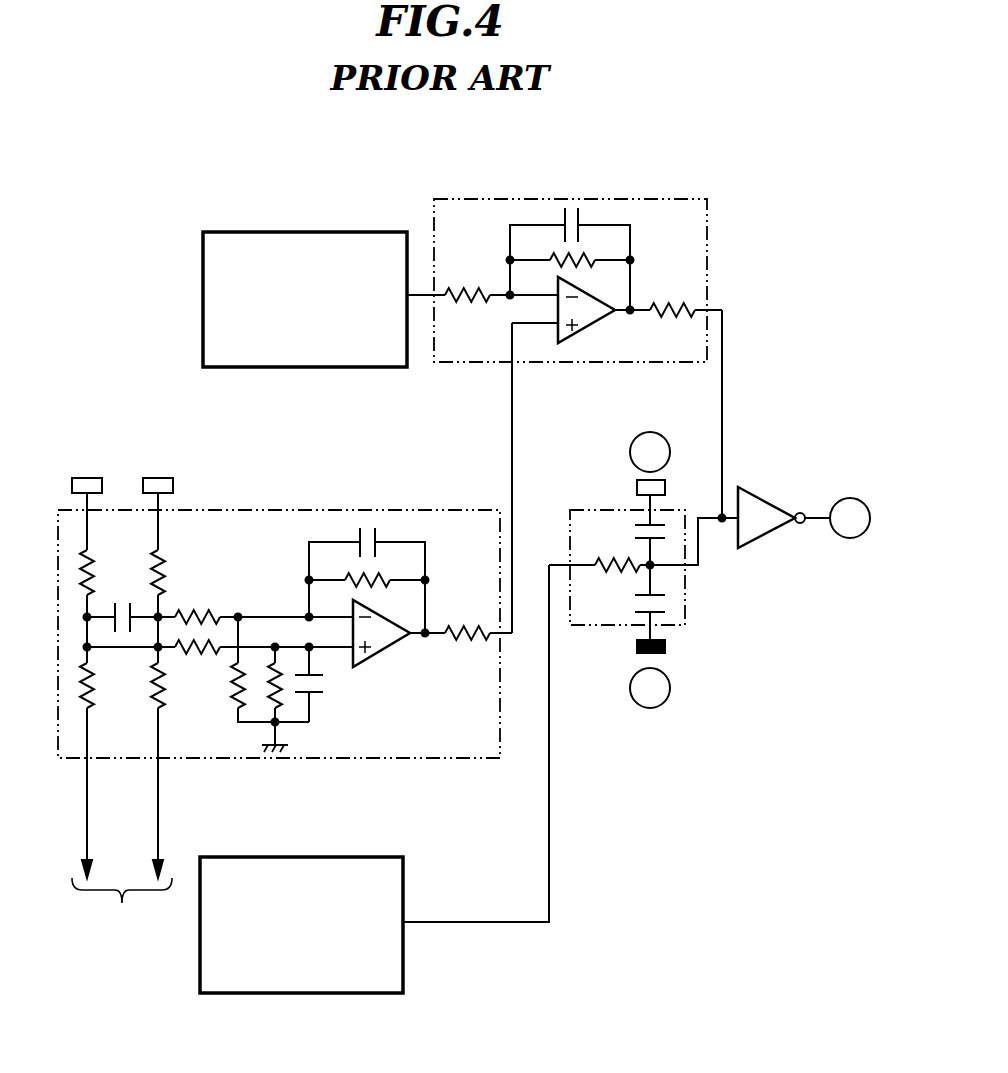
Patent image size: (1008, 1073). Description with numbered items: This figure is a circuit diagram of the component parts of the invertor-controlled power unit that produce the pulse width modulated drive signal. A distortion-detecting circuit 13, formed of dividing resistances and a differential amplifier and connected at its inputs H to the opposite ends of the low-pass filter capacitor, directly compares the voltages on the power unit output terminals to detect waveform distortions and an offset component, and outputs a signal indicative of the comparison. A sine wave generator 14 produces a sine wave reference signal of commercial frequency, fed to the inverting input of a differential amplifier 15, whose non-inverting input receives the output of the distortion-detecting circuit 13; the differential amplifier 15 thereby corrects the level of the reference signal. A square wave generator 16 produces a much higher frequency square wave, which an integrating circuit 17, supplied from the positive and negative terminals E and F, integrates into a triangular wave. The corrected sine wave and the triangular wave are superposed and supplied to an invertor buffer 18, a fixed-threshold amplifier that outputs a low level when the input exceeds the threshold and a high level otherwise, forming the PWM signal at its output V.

The distortion-detecting circuit 13 is at (242, 760).
The sine wave generator 14 is at (203, 303).
The differential amplifier 15 is at (707, 283).
The square wave generator 16 is at (404, 897).
The integrating circuit 17 is at (685, 622).
The invertor buffer 18 is at (768, 493).